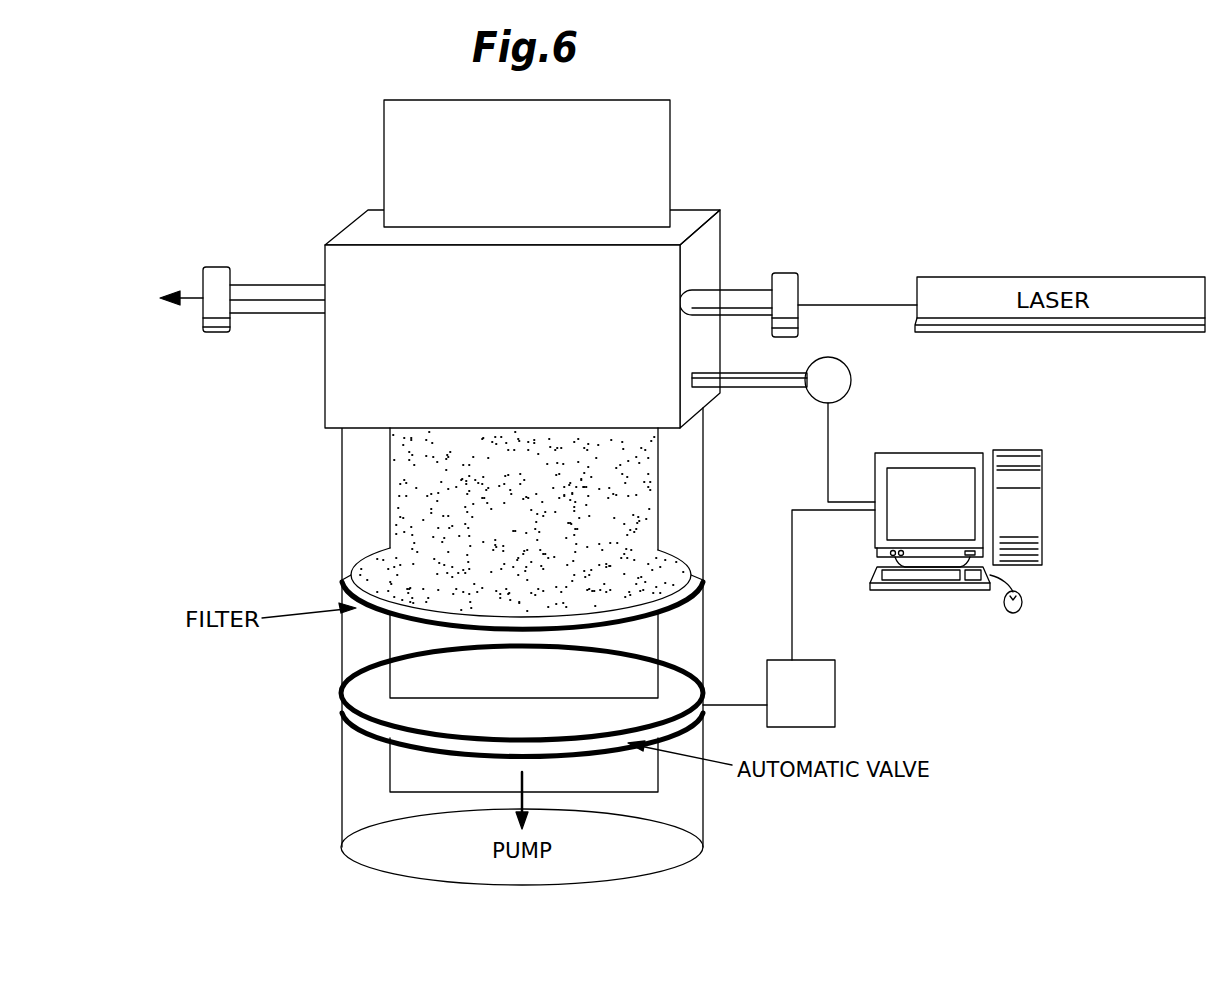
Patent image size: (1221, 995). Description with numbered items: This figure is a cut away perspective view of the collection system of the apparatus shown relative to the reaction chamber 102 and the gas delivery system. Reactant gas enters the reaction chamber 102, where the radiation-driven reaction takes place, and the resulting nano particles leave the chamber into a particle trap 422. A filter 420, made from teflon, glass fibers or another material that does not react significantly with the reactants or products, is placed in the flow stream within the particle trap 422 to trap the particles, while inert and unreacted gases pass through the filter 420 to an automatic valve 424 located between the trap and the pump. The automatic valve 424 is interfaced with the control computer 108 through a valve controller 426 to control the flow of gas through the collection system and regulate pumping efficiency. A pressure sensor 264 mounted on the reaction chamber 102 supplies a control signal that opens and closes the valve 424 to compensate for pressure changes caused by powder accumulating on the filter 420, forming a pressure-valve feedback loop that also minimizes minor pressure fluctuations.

The reaction chamber 102 is at (708, 248).
The pressure sensor 264 is at (837, 392).
The control computer 108 is at (1044, 468).
The particle trap 422 is at (672, 562).
The filter 420 is at (692, 588).
The automatic valve 424 is at (700, 703).
The valve controller 426 is at (837, 675).